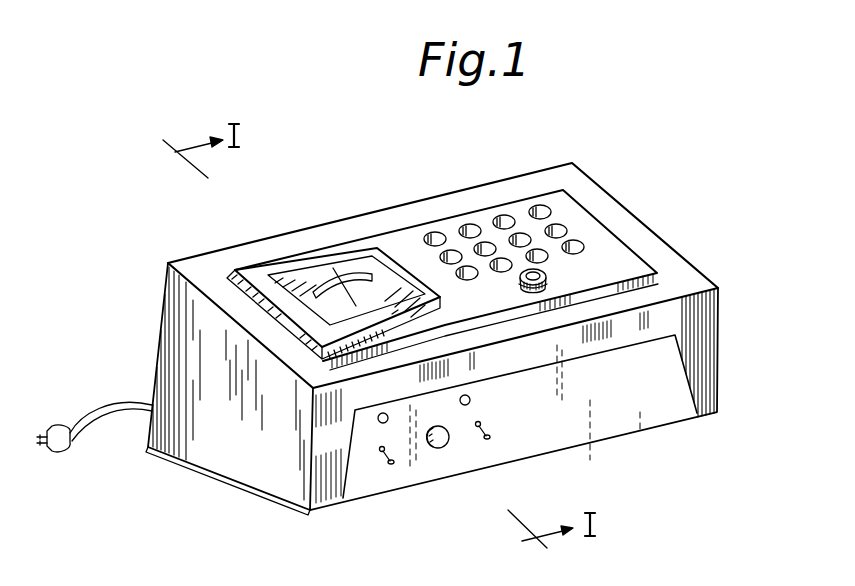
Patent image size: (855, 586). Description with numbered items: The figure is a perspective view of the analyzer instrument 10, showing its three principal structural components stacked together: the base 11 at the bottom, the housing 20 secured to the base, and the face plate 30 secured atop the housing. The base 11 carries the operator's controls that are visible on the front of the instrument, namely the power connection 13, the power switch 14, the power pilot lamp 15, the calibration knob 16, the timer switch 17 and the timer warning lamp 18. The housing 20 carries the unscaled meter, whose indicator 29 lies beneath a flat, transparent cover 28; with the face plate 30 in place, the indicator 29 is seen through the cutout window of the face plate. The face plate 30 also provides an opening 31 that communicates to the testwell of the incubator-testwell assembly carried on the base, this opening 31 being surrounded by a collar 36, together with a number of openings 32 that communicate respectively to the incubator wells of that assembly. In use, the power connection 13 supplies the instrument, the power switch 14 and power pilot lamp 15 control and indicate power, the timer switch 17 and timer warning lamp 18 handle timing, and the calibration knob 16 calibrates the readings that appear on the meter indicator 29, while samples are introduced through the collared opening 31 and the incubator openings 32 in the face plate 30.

The analyzer instrument 10 is at (722, 355).
The base 11 is at (645, 430).
The power connection 13 is at (102, 402).
The power switch 14 is at (386, 463).
The power pilot lamp 15 is at (377, 420).
The calibration knob 16 is at (434, 449).
The timer switch 17 is at (481, 440).
The timer warning lamp 18 is at (471, 400).
The housing 20 is at (172, 318).
The transparent cover 28 is at (372, 260).
The indicator 29 is at (337, 278).
The face plate 30 is at (631, 262).
The opening 31 is at (520, 286).
The openings 32 is at (584, 246).
The collar 36 is at (548, 288).